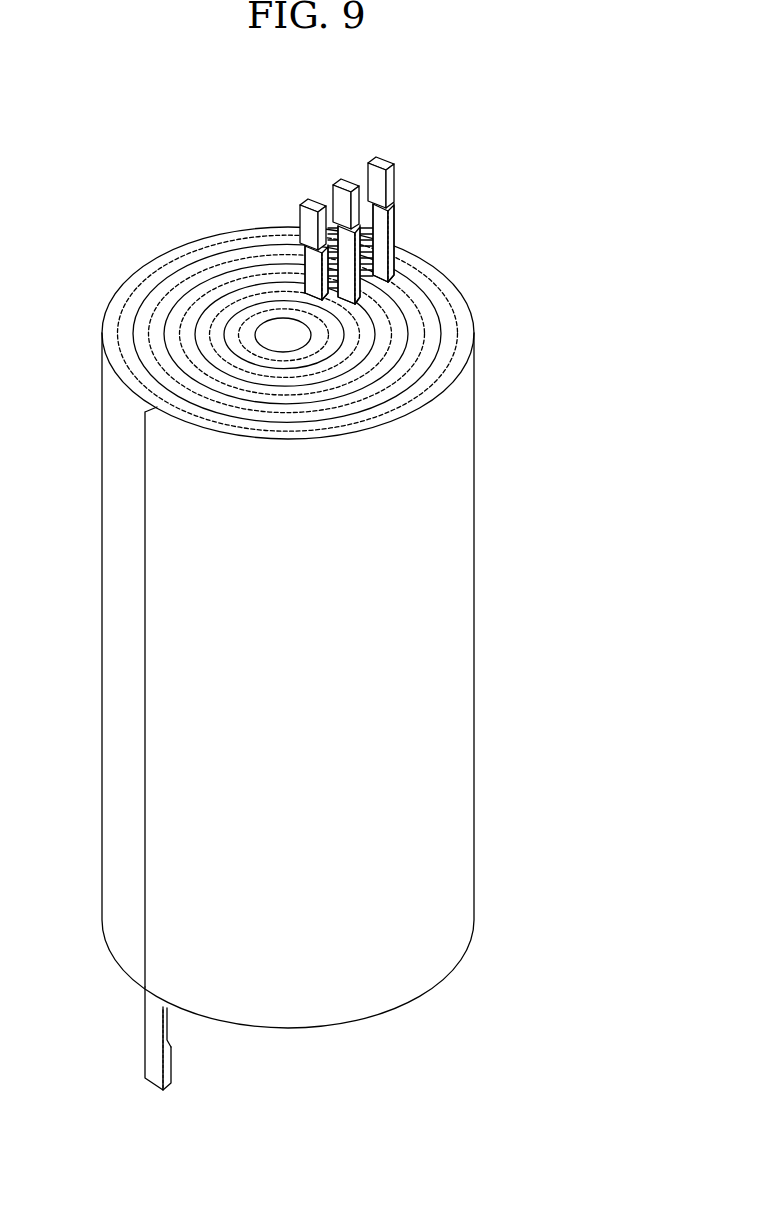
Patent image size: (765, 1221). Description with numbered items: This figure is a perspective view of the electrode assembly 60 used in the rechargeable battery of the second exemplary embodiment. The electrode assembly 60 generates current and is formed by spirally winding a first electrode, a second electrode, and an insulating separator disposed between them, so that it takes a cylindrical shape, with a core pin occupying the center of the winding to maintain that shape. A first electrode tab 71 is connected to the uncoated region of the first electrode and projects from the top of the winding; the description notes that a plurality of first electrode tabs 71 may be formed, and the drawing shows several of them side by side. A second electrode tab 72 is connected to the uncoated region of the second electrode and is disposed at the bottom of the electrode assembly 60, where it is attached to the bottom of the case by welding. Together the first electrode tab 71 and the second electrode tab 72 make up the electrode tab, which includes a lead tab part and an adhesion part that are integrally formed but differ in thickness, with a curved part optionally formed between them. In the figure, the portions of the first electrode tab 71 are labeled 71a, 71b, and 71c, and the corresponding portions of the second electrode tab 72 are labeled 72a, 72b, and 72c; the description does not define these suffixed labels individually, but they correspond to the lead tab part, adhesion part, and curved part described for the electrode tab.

The electrode assembly 60 is at (497, 618).
The first electrode tab 71 is at (381, 199).
The first tab portion of first electrode tab 71a is at (378, 178).
The second tab portion of first electrode tab 71b is at (388, 234).
The third tab portion of first electrode tab 71c is at (388, 222).
The second electrode tab 72 is at (146, 1050).
The first tab portion of second electrode tab 72a is at (172, 1065).
The second tab portion of second electrode tab 72b is at (153, 1022).
The third tab portion of second electrode tab 72c is at (167, 1038).